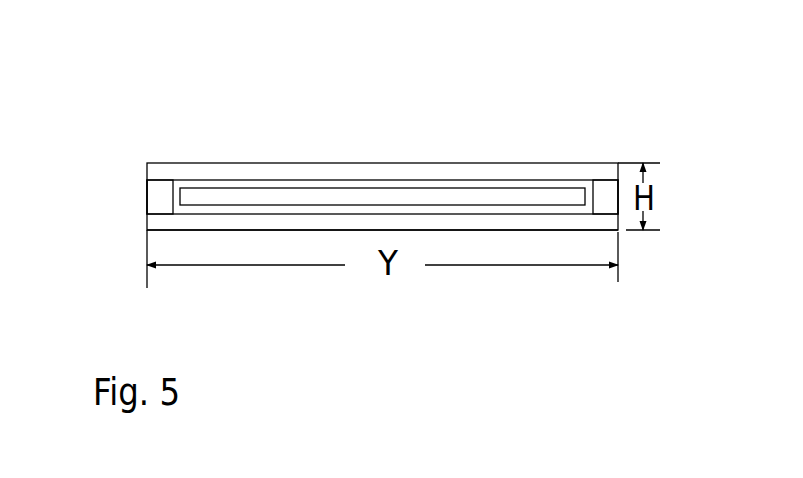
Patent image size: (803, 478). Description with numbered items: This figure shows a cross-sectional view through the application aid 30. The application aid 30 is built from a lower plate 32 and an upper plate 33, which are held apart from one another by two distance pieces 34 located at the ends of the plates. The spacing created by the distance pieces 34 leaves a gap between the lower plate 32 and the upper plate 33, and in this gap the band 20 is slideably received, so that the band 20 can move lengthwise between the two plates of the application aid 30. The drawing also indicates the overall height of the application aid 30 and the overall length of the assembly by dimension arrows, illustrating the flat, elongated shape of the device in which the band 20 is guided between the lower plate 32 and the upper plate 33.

The application aid 30 is at (138, 95).
The band 20 is at (265, 197).
The upper plate 33 is at (500, 172).
The distance pieces 34 is at (152, 195).
The lower plate 32 is at (147, 222).